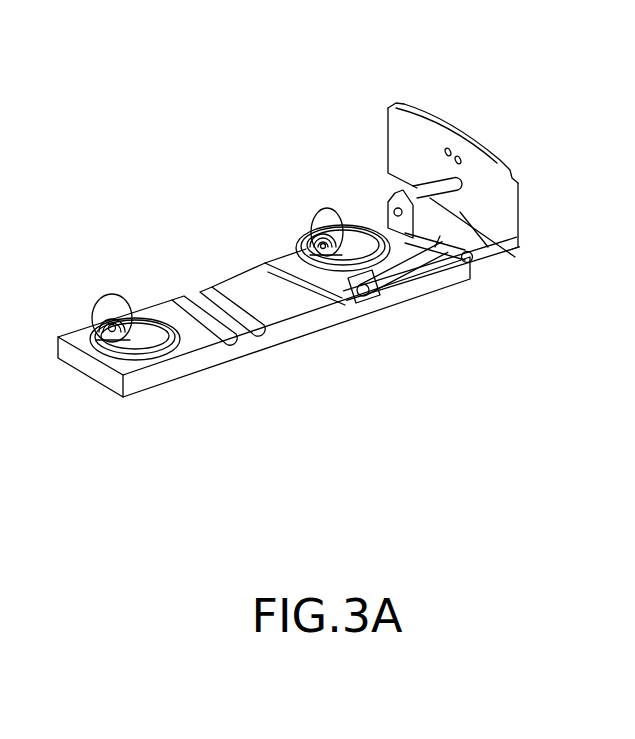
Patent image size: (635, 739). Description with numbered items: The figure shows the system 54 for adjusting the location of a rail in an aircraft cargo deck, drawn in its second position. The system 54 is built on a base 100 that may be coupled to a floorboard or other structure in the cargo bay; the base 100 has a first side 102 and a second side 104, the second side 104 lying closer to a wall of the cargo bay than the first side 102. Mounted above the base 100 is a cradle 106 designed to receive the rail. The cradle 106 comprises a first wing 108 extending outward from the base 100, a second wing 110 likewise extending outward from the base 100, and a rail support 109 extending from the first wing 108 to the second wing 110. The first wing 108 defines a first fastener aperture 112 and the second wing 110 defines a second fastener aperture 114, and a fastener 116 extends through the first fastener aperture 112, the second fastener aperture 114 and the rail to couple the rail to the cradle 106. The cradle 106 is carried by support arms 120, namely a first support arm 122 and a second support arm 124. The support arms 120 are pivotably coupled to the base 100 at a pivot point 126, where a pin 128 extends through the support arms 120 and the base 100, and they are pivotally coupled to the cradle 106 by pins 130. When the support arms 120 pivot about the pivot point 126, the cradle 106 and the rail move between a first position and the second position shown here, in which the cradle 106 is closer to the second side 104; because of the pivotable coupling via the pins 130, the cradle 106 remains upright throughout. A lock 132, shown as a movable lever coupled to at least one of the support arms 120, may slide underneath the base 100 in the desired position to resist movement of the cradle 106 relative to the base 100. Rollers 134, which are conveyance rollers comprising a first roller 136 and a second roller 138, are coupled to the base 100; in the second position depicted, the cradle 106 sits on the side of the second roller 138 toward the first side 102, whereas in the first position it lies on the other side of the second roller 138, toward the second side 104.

The system 54 is at (188, 130).
The base 100 is at (237, 273).
The first side 102 is at (85, 397).
The second side 104 is at (510, 249).
The cradle 106 is at (388, 100).
The first wing 108 is at (435, 247).
The rail support 109 is at (460, 221).
The second wing 110 is at (504, 161).
The first fastener aperture 112 is at (408, 243).
The second fastener aperture 114 is at (458, 192).
The fastener 116 is at (452, 264).
The support arms 120 is at (374, 186).
The first support arm 122 is at (358, 205).
The second support arm 124 is at (450, 262).
The pivot point 126 is at (350, 300).
The pin 128 is at (322, 306).
The pins 130 is at (475, 265).
The lock 132 is at (370, 302).
The rollers 134 is at (107, 283).
The first roller 136 is at (124, 303).
The second roller 138 is at (318, 216).